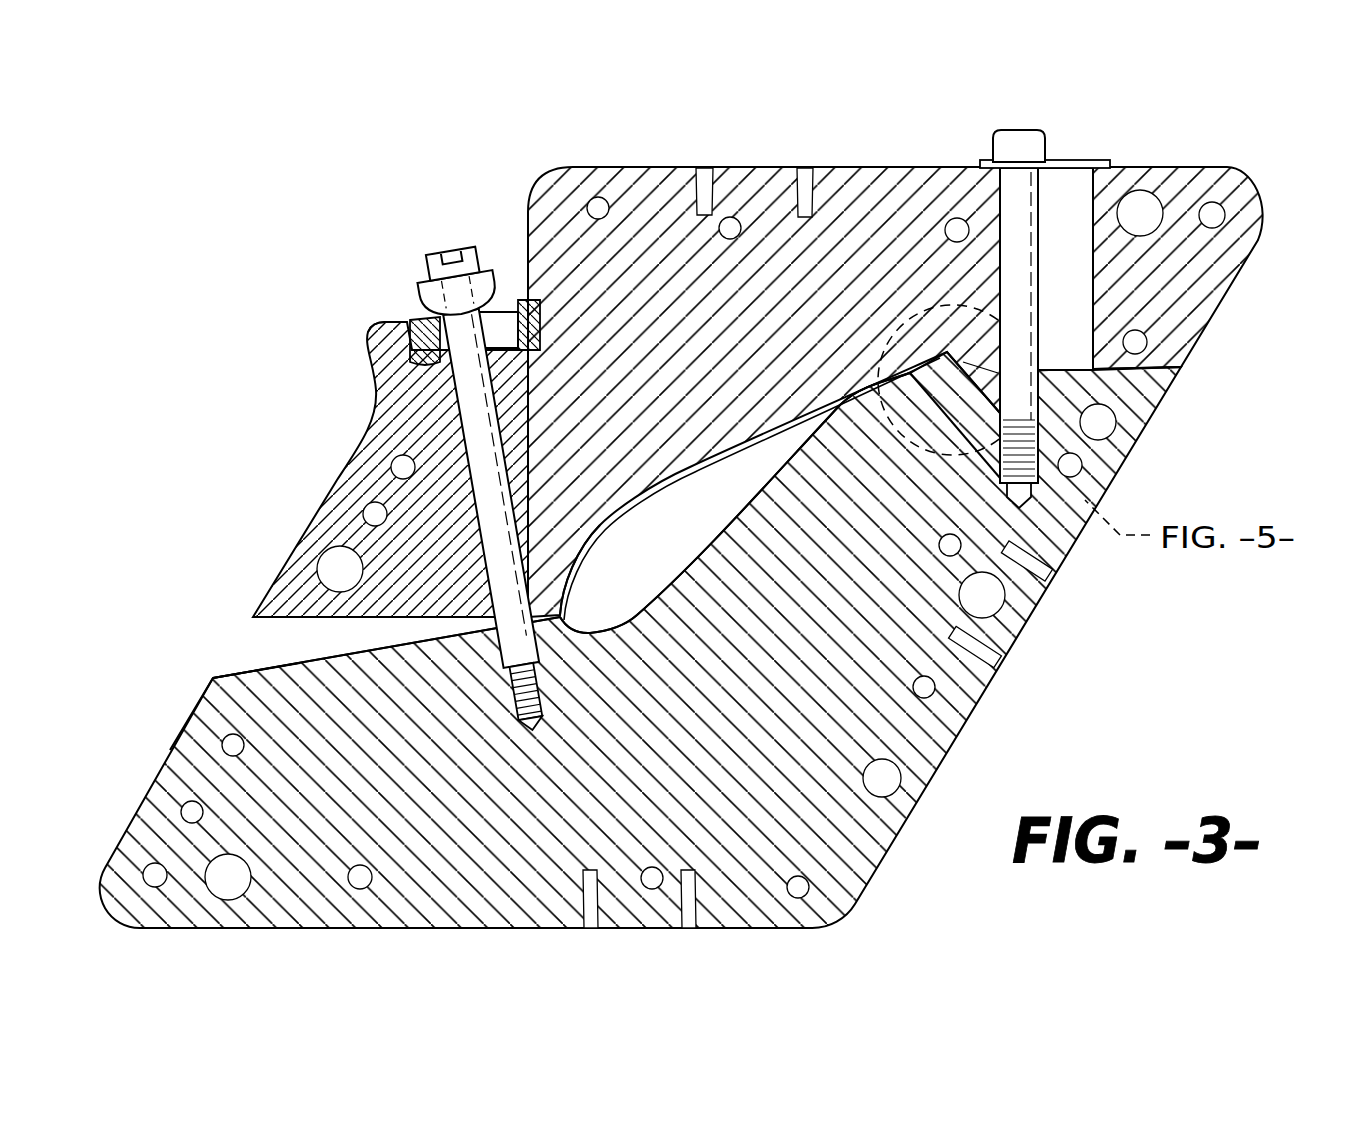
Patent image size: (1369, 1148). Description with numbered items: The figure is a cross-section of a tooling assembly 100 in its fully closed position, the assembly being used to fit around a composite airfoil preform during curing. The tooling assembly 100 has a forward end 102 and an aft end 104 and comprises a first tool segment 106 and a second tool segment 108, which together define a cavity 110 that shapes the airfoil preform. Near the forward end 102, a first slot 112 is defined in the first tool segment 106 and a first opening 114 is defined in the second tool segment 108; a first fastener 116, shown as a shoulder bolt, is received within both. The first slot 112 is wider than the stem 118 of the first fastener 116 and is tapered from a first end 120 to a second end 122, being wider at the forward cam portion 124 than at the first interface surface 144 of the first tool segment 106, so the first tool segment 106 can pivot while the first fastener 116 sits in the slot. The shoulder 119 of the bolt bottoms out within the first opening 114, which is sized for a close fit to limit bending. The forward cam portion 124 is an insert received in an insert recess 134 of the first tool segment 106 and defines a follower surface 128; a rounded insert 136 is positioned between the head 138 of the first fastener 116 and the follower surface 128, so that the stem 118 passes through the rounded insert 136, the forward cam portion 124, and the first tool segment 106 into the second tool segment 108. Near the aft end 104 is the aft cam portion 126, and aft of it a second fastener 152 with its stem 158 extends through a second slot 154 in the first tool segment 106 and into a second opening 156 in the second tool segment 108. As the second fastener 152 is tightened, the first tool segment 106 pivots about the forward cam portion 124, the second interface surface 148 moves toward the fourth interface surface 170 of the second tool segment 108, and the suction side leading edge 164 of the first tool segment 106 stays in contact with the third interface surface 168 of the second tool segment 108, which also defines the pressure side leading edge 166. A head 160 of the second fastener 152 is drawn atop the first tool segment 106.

The tooling assembly 100 is at (699, 493).
The forward end 102 is at (341, 476).
The aft end 104 is at (699, 634).
The first tool segment 106 is at (662, 185).
The second tool segment 108 is at (150, 820).
The cavity 110 is at (706, 542).
The first slot 112 is at (513, 452).
The first opening 114 is at (532, 724).
The first fastener 116 is at (494, 466).
The stem 118 is at (555, 477).
The shoulder 119 is at (525, 691).
The first end 120 is at (528, 357).
The second end 122 is at (483, 606).
The forward cam portion 124 is at (422, 342).
The aft cam portion 126 is at (975, 352).
The follower surface 128 is at (502, 297).
The insert recess 134 is at (428, 365).
The rounded insert 136 is at (457, 295).
The head 138 is at (453, 264).
The first interface surface 144 is at (280, 623).
The second interface surface 148 is at (1125, 395).
The second fastener 152 is at (1103, 283).
The second slot 154 is at (1063, 205).
The second opening 156 is at (1055, 447).
The stem 158 is at (1020, 297).
The fastener head 160 is at (1015, 142).
The suction side leading edge 164 is at (565, 610).
The pressure side leading edge 166 is at (630, 620).
The third interface surface 168 is at (248, 672).
The fourth interface surface 170 is at (1165, 393).